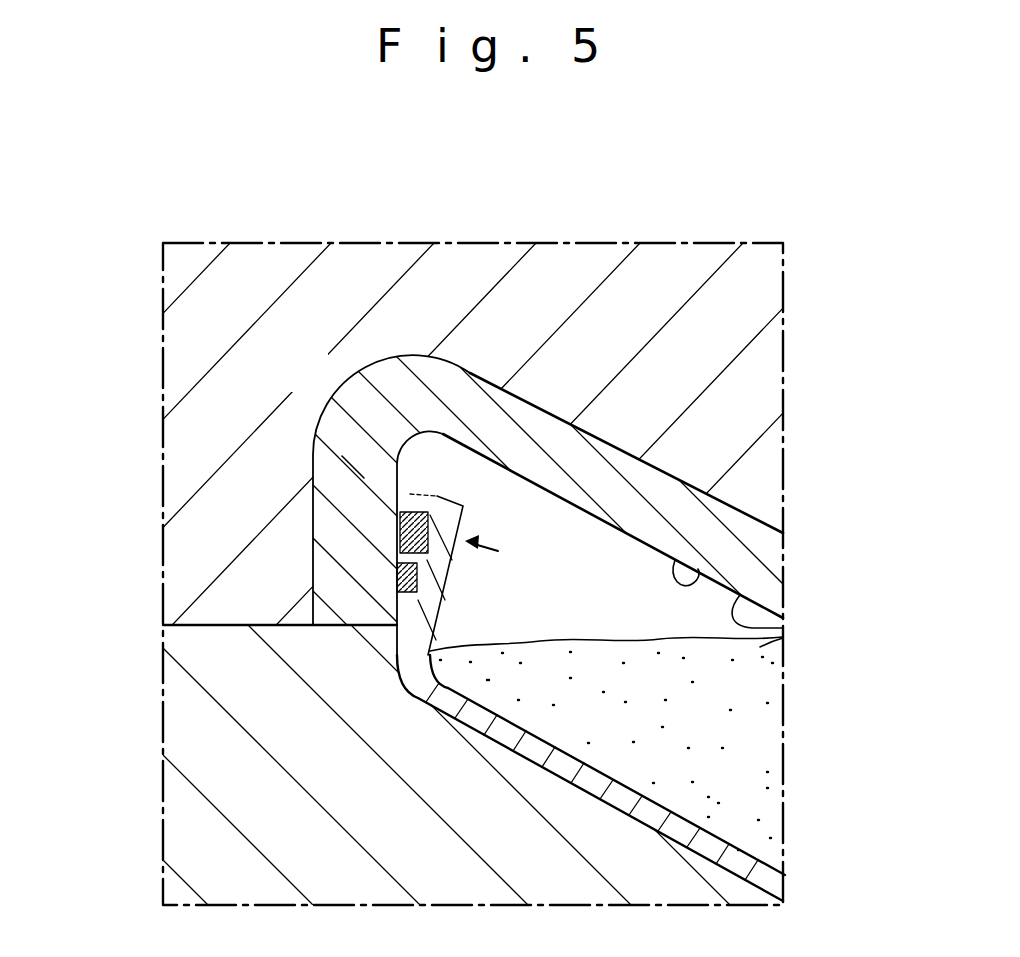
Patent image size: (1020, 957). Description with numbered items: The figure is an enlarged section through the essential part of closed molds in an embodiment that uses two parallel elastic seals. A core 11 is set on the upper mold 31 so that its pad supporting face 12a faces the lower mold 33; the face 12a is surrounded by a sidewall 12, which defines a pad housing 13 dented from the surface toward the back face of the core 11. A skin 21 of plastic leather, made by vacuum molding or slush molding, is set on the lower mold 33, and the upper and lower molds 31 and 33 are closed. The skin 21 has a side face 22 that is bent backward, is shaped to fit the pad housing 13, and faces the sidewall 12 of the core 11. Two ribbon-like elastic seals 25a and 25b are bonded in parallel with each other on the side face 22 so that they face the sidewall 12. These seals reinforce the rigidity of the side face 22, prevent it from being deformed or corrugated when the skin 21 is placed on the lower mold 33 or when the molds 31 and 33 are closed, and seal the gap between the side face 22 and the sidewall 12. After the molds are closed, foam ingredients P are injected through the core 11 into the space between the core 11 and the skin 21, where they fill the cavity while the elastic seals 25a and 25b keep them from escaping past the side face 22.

The core 11 is at (768, 572).
The sidewall 12 is at (330, 523).
The pad supporting face 12a is at (785, 627).
The pad housing 13 is at (700, 568).
The skin 21 is at (750, 858).
The side face 22 is at (387, 574).
The elastic seal 25a is at (340, 455).
The elastic seal 25b is at (397, 566).
The upper mold 31 is at (750, 377).
The lower mold 33 is at (205, 773).
The foam ingredients P is at (750, 748).